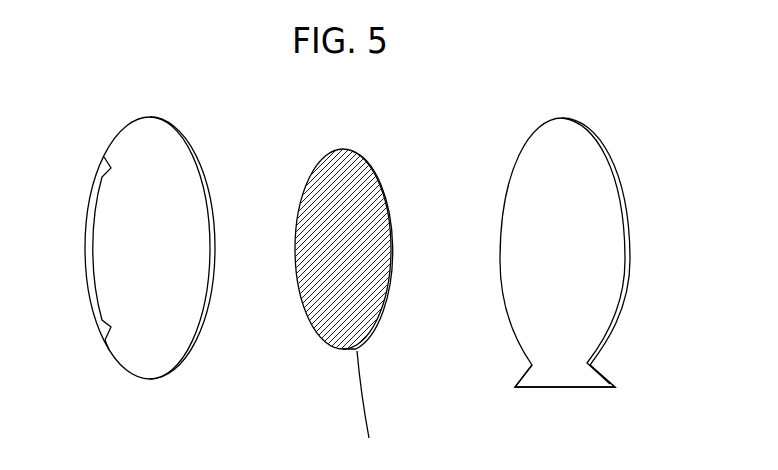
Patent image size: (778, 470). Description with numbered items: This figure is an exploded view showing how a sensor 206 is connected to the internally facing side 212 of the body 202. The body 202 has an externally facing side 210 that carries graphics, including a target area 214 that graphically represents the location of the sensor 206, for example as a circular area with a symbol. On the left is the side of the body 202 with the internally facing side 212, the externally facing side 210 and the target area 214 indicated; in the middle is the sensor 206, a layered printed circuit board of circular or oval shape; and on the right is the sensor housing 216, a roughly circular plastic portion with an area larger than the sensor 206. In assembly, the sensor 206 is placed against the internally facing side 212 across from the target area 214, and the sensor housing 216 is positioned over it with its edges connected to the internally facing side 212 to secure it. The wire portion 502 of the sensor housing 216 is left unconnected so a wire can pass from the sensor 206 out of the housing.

The body 202 is at (190, 62).
The sensor 206 is at (332, 150).
The externally facing side 210 is at (122, 130).
The internally facing side 212 is at (191, 350).
The target area 214 is at (95, 198).
The sensor housing 216 is at (548, 120).
The wire portion 502 is at (598, 388).